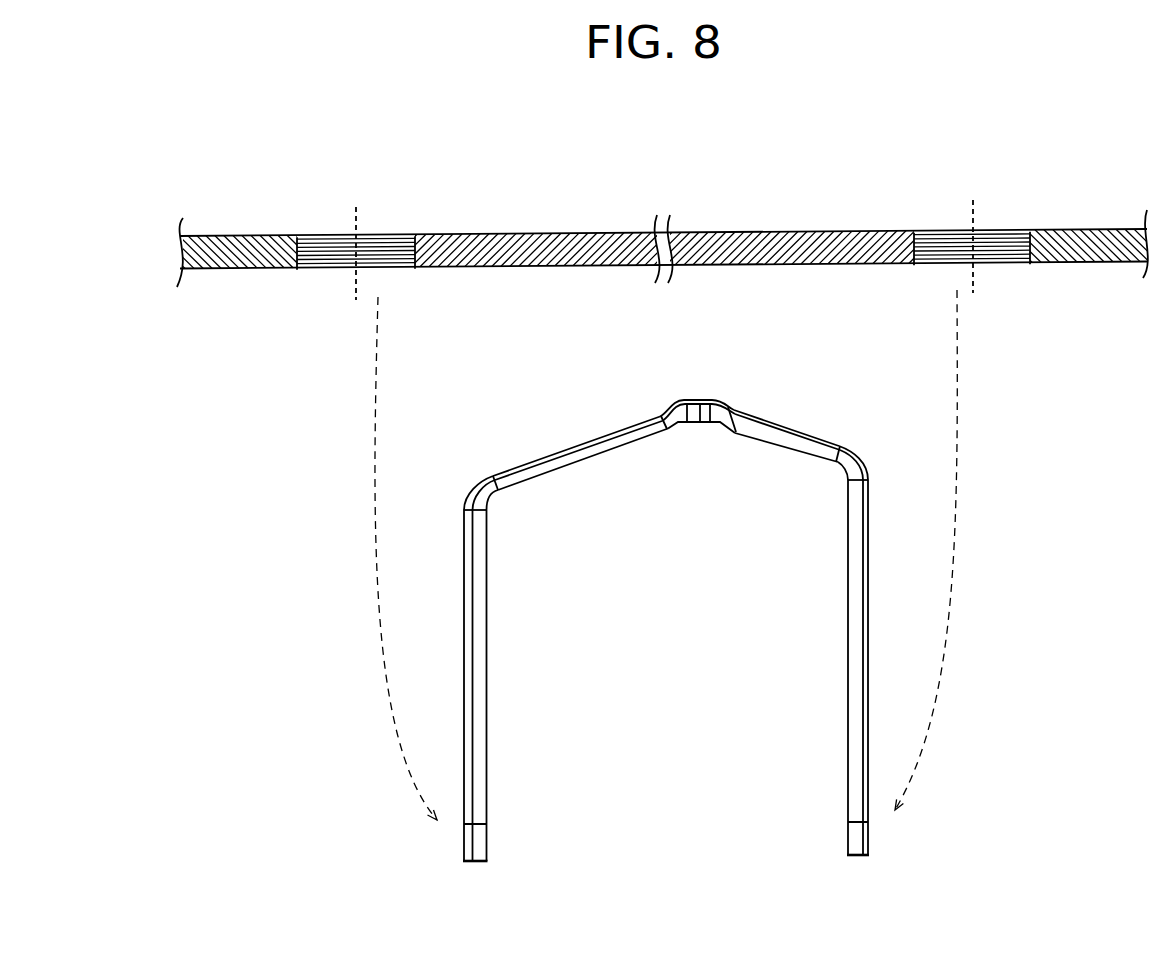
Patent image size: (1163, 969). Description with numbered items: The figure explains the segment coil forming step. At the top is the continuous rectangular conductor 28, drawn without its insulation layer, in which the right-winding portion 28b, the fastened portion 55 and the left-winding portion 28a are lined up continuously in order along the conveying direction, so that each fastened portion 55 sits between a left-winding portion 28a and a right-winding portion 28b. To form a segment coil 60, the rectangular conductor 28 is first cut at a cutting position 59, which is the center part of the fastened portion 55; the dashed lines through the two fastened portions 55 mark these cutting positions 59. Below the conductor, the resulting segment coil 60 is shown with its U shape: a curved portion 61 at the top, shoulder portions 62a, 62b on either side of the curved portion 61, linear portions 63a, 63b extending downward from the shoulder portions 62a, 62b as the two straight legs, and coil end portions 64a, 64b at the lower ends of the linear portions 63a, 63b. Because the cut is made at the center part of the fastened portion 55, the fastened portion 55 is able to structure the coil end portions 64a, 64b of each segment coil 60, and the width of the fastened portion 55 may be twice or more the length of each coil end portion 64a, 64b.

The rectangular conductor 28 is at (785, 170).
The left-winding portion 28a is at (237, 238).
The right-winding portion 28b is at (520, 233).
The fastened portion 55 is at (320, 236).
The cutting position 59 is at (355, 288).
The segment coil 60 is at (803, 355).
The curved portion 61 is at (608, 407).
The shoulder portion 62a is at (486, 477).
The shoulder portion 62b is at (858, 455).
The linear portion 63a is at (478, 612).
The linear portion 63b is at (862, 610).
The coil end portion 64a is at (476, 846).
The coil end portion 64b is at (852, 840).